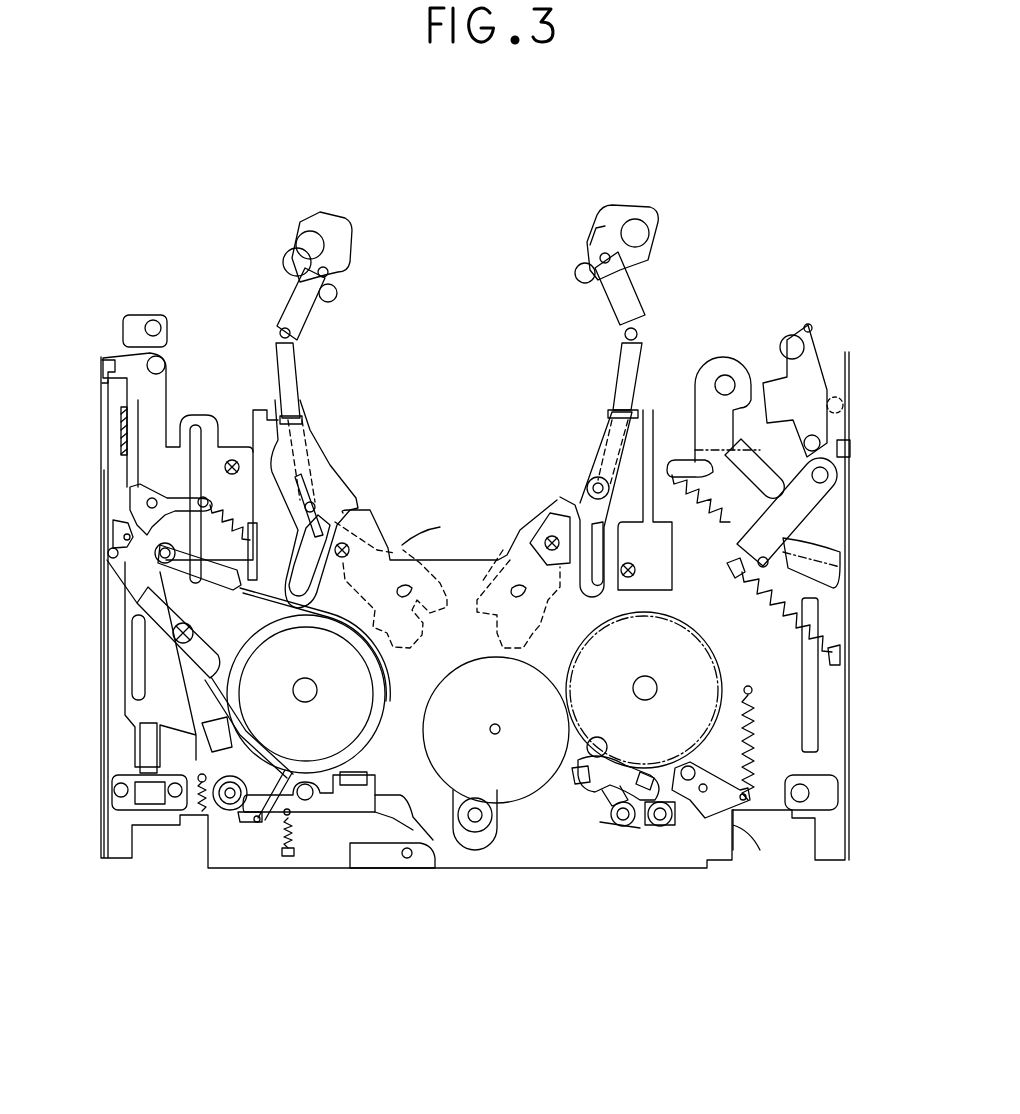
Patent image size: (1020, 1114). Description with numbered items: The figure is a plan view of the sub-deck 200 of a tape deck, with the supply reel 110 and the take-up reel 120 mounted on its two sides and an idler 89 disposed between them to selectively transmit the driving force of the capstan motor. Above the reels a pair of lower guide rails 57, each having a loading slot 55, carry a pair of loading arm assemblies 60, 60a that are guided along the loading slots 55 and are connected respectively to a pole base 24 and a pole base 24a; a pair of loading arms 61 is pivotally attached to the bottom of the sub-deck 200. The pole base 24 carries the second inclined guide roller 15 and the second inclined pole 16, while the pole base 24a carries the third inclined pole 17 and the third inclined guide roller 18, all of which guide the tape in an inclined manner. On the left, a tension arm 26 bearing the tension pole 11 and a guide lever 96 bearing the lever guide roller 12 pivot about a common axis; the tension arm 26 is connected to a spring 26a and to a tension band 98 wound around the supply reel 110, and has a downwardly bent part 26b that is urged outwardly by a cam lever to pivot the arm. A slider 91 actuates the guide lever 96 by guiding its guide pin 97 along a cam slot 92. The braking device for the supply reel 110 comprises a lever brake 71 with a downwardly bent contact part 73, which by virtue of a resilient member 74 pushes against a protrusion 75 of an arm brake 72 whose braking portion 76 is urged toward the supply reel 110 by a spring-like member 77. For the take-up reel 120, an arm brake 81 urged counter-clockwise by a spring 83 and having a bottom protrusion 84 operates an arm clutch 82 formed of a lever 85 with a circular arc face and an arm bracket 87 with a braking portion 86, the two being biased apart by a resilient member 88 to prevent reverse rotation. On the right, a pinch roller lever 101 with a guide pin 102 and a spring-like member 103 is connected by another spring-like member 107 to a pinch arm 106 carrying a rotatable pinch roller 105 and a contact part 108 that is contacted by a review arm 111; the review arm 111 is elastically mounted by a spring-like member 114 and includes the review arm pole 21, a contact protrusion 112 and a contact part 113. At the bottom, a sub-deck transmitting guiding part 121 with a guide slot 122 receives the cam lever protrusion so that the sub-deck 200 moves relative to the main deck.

The tension pole 11 is at (166, 362).
The lever guide roller 12 is at (160, 322).
The second inclined guide roller 15 is at (305, 240).
The second inclined pole 16 is at (337, 286).
The third inclined pole 17 is at (583, 282).
The third inclined guide roller 18 is at (640, 222).
The review arm pole 21 is at (787, 335).
The pole base 24 is at (345, 250).
The pole base 24a is at (607, 230).
The tension arm 26 is at (150, 408).
The spring 26a is at (220, 505).
The downwardly bent part 26b is at (112, 385).
The loading slot 55 is at (283, 436).
The lower guide rail 57 is at (285, 420).
The loading arm assembly 60 is at (280, 305).
The loading arm assembly 60a is at (610, 367).
The loading arm 61 is at (495, 553).
The lever brake 71 is at (345, 812).
The arm brake 72 is at (248, 817).
The contact part 73 is at (372, 768).
The resilient member 74 is at (290, 838).
The protrusion 75 is at (258, 828).
The braking portion 76 is at (268, 795).
The spring-like member 77 is at (233, 812).
The arm brake 81 is at (735, 818).
The arm clutch 82 is at (635, 823).
The spring 83 is at (757, 775).
The protrusion 84 is at (705, 790).
The lever 85 is at (610, 785).
The braking portion 86 is at (580, 750).
The arm bracket 87 is at (600, 803).
The resilient member 88 is at (645, 817).
The idler 89 is at (481, 717).
The slider 91 is at (128, 722).
The cam slot 92 is at (112, 555).
The guide lever 96 is at (133, 322).
The guide pin 97 is at (125, 535).
The tension band 98 is at (252, 600).
The pinch roller lever 101 is at (780, 540).
The guide pin 102 is at (765, 585).
The spring-like member 103 is at (827, 650).
The pinch roller 105 is at (712, 357).
The pinch arm 106 is at (822, 488).
The spring-like member 107 is at (700, 548).
The contact part 108 is at (768, 430).
The supply reel 110 is at (281, 670).
The review arm 111 is at (820, 387).
The contact protrusion 112 is at (805, 325).
The contact part 113 is at (818, 370).
The spring-like member 114 is at (838, 452).
The take-up reel 120 is at (624, 673).
The sub-deck transmitting guiding part 121 is at (385, 838).
The guide slot 122 is at (417, 817).
The sub-deck 200 is at (548, 880).